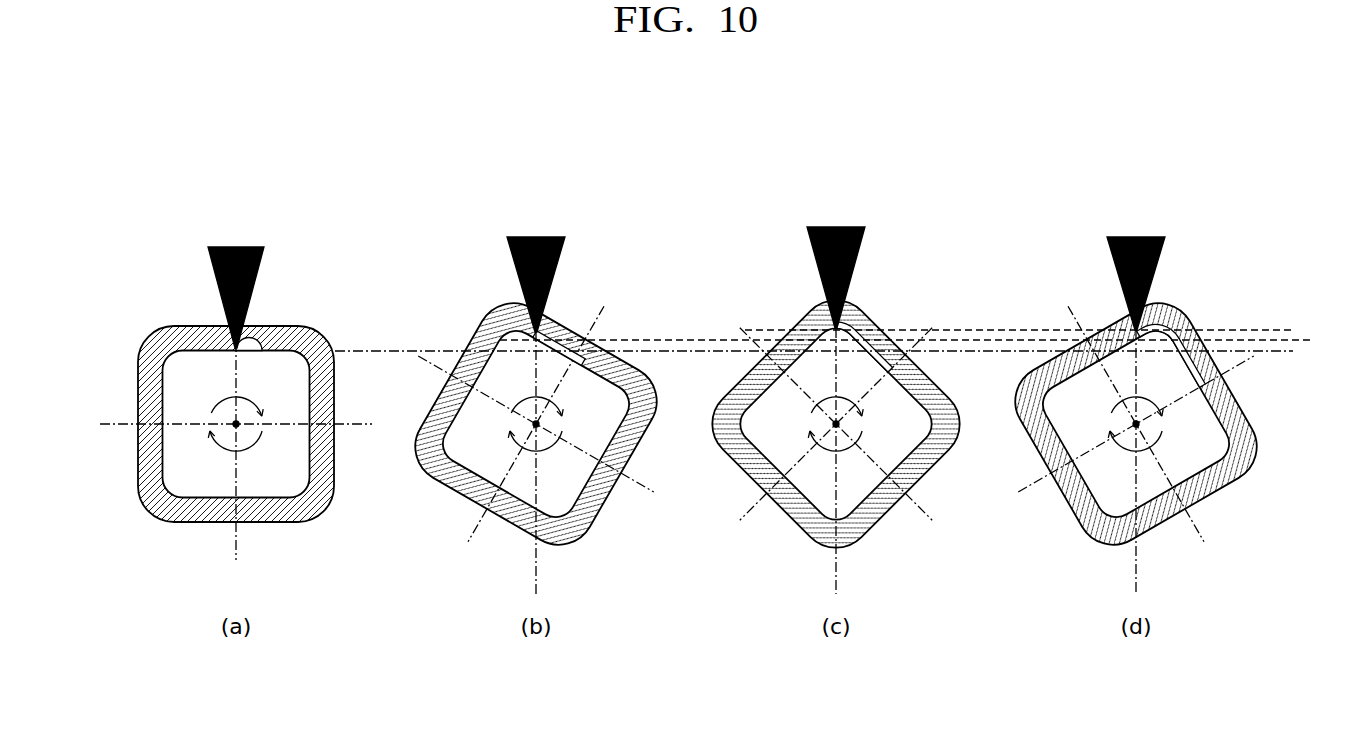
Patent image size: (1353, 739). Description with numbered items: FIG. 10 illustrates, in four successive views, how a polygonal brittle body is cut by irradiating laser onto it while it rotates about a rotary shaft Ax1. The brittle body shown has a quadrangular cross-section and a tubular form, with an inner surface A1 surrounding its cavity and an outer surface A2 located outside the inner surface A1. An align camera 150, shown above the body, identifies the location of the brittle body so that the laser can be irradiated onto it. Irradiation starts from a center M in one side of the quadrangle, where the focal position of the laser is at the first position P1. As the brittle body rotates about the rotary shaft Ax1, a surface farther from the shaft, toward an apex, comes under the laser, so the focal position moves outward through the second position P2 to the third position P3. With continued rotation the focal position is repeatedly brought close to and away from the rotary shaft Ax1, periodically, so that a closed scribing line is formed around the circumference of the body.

The align camera 150 is at (177, 297).
The center M is at (279, 314).
The rotary shaft Ax1 is at (162, 412).
The inner surface A1 is at (203, 424).
The outer surface A2 is at (191, 433).
The first position P1 is at (821, 365).
The second position P2 is at (922, 339).
The third position P3 is at (1026, 316).